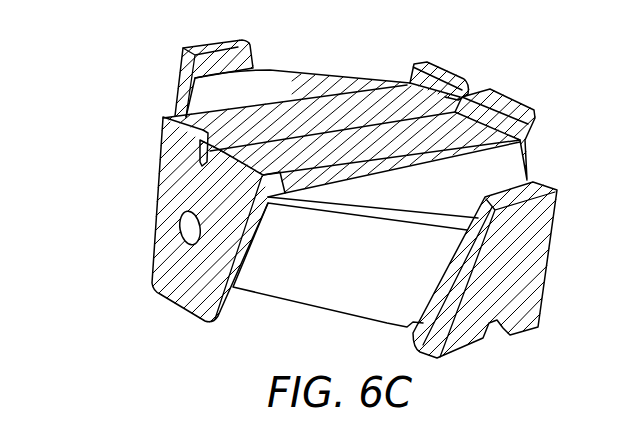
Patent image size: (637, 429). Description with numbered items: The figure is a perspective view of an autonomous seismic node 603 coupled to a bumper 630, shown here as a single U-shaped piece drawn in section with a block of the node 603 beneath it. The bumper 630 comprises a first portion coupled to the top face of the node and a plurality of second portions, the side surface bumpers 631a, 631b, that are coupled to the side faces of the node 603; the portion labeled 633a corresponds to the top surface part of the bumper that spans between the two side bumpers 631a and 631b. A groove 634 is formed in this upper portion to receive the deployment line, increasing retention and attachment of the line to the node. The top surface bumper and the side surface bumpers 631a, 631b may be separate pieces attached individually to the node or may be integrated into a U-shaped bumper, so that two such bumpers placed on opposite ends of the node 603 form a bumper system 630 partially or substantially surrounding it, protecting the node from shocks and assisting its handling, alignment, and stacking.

The bumper 630 is at (313, 181).
The second portion (side surface bumper) 631a is at (157, 209).
The second portion (side surface bumper) 631b is at (530, 103).
The guide plate 633a is at (295, 123).
The groove 634 is at (465, 88).
The seismic node 603 is at (536, 181).